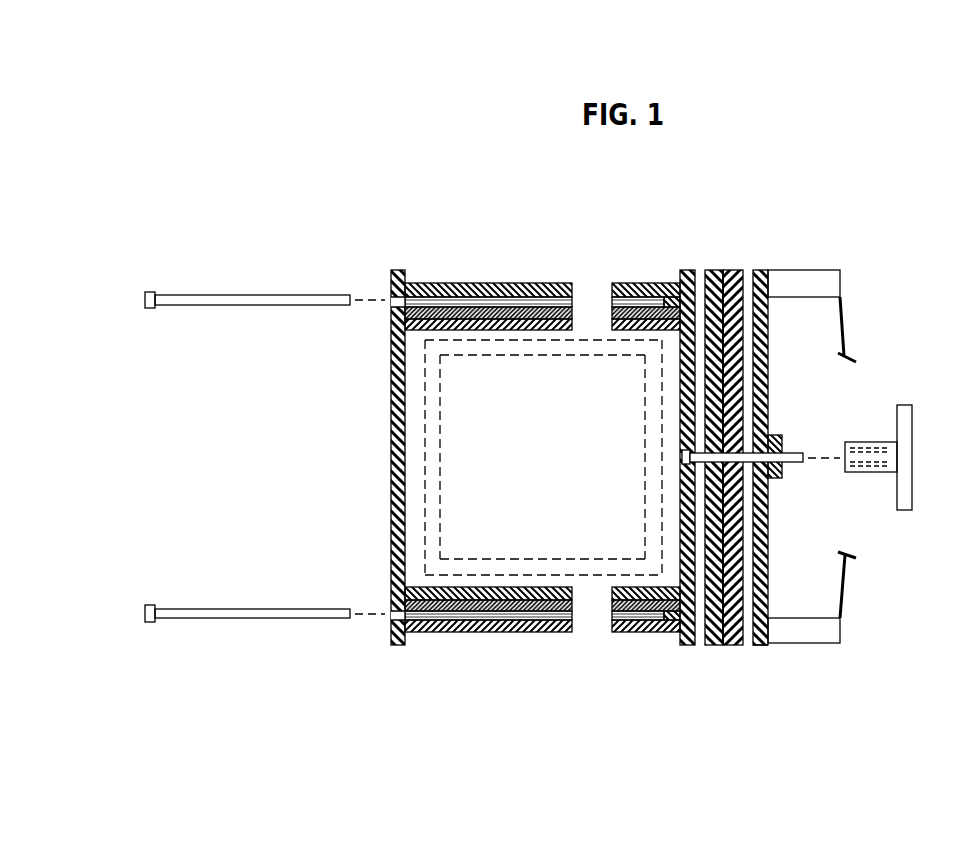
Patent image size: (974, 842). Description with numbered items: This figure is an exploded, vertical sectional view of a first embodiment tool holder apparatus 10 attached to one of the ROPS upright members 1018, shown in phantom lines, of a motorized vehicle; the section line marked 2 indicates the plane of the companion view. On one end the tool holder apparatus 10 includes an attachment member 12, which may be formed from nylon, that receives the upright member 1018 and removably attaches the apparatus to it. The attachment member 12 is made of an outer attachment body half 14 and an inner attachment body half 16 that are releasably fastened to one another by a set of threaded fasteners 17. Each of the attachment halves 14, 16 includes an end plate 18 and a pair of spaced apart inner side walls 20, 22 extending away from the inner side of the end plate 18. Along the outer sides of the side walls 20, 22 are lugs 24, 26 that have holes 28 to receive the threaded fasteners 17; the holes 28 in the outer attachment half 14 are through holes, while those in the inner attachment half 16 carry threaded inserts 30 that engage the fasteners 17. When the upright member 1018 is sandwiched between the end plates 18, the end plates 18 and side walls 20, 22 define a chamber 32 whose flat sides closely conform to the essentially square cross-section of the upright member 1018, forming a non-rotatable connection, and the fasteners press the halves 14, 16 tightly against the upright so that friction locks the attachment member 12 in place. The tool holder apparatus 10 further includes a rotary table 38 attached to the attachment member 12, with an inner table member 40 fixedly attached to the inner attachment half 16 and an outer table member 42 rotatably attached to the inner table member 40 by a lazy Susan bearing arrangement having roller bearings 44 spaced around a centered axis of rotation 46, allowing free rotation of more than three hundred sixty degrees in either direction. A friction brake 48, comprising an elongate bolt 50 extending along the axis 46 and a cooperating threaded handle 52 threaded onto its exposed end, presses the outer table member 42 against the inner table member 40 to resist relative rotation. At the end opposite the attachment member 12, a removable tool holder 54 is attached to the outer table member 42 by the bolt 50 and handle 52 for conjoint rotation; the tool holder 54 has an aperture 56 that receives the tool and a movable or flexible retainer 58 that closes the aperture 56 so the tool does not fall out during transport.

The tool holder apparatus 10 is at (211, 180).
The attachment member 12 is at (506, 447).
The outer attachment body half 14 is at (445, 283).
The inner attachment body half 16 is at (660, 283).
The threaded fasteners 17 is at (233, 293).
The end plate 18 is at (390, 505).
The inner side wall 20 is at (480, 330).
The inner side wall 22 is at (527, 590).
The lug 24 is at (472, 283).
The lug 26 is at (460, 640).
The holes 28 is at (508, 283).
The threaded inserts 30 is at (633, 283).
The chamber 32 is at (465, 405).
The upright member 1018 is at (440, 455).
The rotary table 38 is at (726, 468).
The inner table member 40 is at (720, 270).
The outer table member 42 is at (733, 270).
The roller bearings 44 is at (757, 290).
The axis of rotation 46 is at (823, 456).
The friction brake 48 is at (800, 472).
The elongate bolt 50 is at (783, 435).
The threaded handle 52 is at (900, 435).
The tool holder 54 is at (766, 645).
The aperture 56 is at (792, 528).
The retainer 58 is at (840, 600).
The section line 2 is at (592, 268).